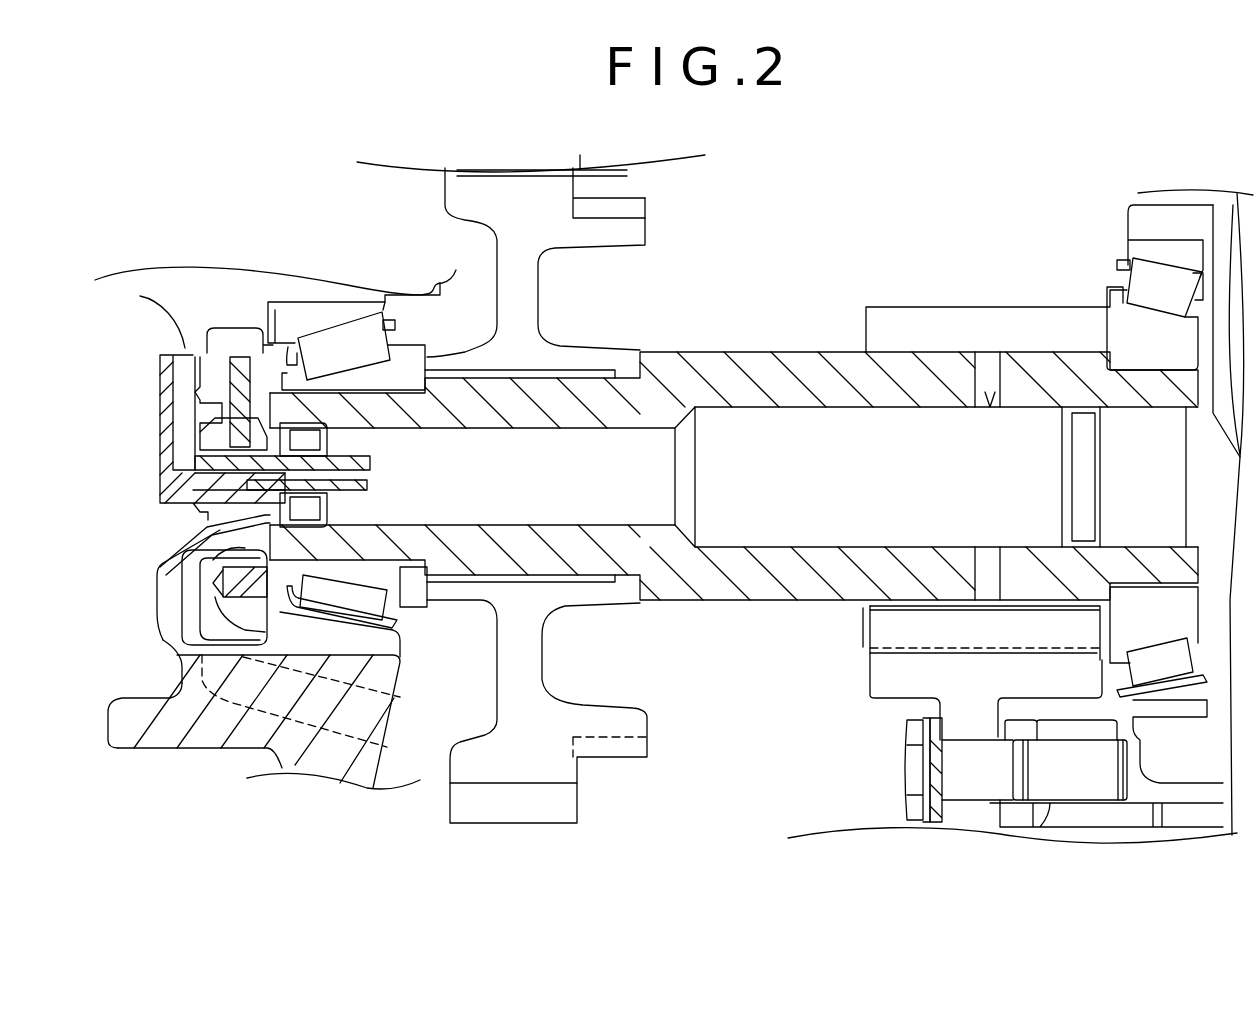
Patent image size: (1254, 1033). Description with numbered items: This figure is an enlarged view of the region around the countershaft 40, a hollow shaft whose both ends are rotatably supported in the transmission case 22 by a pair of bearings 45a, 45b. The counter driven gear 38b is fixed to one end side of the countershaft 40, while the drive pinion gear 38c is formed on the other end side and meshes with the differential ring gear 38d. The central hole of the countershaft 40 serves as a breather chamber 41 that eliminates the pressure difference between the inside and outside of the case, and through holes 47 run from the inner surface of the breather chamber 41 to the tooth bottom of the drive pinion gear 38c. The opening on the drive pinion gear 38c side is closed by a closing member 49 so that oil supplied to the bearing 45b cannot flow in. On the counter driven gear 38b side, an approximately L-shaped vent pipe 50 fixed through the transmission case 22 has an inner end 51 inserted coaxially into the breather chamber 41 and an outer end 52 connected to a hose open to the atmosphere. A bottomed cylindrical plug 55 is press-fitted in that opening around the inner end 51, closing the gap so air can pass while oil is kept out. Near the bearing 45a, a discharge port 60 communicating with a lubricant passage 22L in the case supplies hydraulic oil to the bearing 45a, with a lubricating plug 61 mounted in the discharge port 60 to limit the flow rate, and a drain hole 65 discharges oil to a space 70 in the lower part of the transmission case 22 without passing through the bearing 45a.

The transmission case 22 is at (165, 639).
The lubricant passage 22L is at (178, 673).
The counter driven gear 38b is at (537, 284).
The drive pinion gear 38c is at (1003, 307).
The differential ring gear 38d is at (872, 680).
The countershaft 40 is at (770, 350).
The breather chamber 41 is at (482, 477).
The bearing 45a is at (405, 622).
The bearing 45b is at (1108, 272).
The through holes 47 is at (988, 408).
The closing member 49 is at (1060, 466).
The vent pipe 50 is at (162, 460).
The inner end 51 is at (368, 464).
The outer end 52 is at (162, 392).
The plug 55 is at (362, 508).
The discharge port 60 is at (195, 585).
The lubricating plug 61 is at (190, 574).
The drain hole 65 is at (233, 703).
The space 70 is at (284, 721).